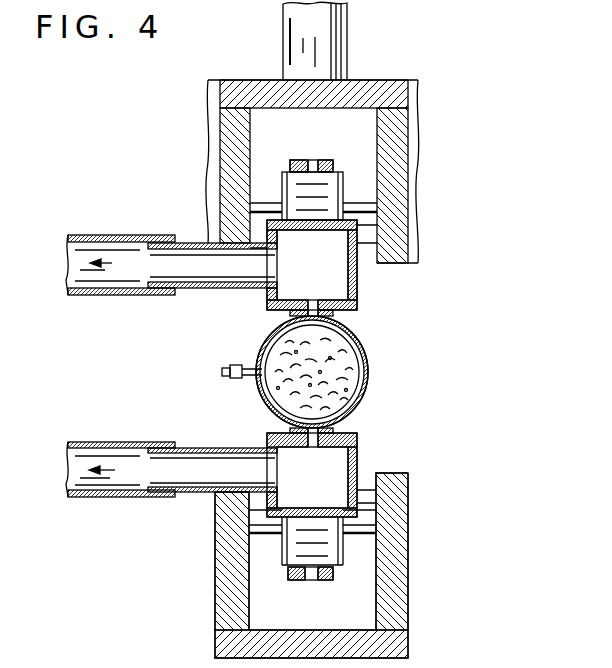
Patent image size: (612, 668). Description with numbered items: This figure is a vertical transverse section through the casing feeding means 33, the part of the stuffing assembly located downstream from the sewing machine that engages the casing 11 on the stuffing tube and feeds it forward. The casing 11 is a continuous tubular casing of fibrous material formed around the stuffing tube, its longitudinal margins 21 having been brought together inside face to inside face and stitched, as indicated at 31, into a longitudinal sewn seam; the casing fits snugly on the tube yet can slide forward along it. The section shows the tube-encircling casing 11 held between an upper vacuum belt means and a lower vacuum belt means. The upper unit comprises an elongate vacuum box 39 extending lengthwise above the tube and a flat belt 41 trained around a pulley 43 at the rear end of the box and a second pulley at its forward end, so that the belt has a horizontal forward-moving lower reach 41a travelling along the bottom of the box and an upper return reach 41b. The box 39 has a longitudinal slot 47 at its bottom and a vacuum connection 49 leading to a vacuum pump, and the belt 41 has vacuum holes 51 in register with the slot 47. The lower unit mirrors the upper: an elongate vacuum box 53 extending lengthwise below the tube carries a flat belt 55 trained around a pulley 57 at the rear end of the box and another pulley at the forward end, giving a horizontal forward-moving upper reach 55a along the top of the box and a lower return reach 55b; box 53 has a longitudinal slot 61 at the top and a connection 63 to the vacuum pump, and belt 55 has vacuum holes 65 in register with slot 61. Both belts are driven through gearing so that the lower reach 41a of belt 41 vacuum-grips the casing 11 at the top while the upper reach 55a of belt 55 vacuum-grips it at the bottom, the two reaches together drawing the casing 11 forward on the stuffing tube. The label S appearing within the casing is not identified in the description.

The casing 11 is at (367, 357).
The sample S is at (350, 370).
The longitudinal margins 21 is at (230, 372).
The stitching 31 is at (240, 380).
The casing feeding means 33 is at (198, 135).
The vacuum box 39 is at (358, 273).
The flat belt 41 is at (293, 156).
The lower reach 41a is at (291, 312).
The upper return reach 41b is at (352, 142).
The pulley 43 is at (343, 184).
The longitudinal slot 47 is at (321, 295).
The vacuum connection 49 is at (222, 283).
The vacuum holes 51 is at (314, 160).
The vacuum box 53 is at (358, 469).
The flat belt 55 is at (286, 579).
The upper reach 55a is at (350, 427).
The lower return reach 55b is at (334, 578).
The pulley 57 is at (343, 550).
The longitudinal slot 61 is at (304, 442).
The vacuum connection 63 is at (232, 483).
The vacuum holes 65 is at (315, 446).